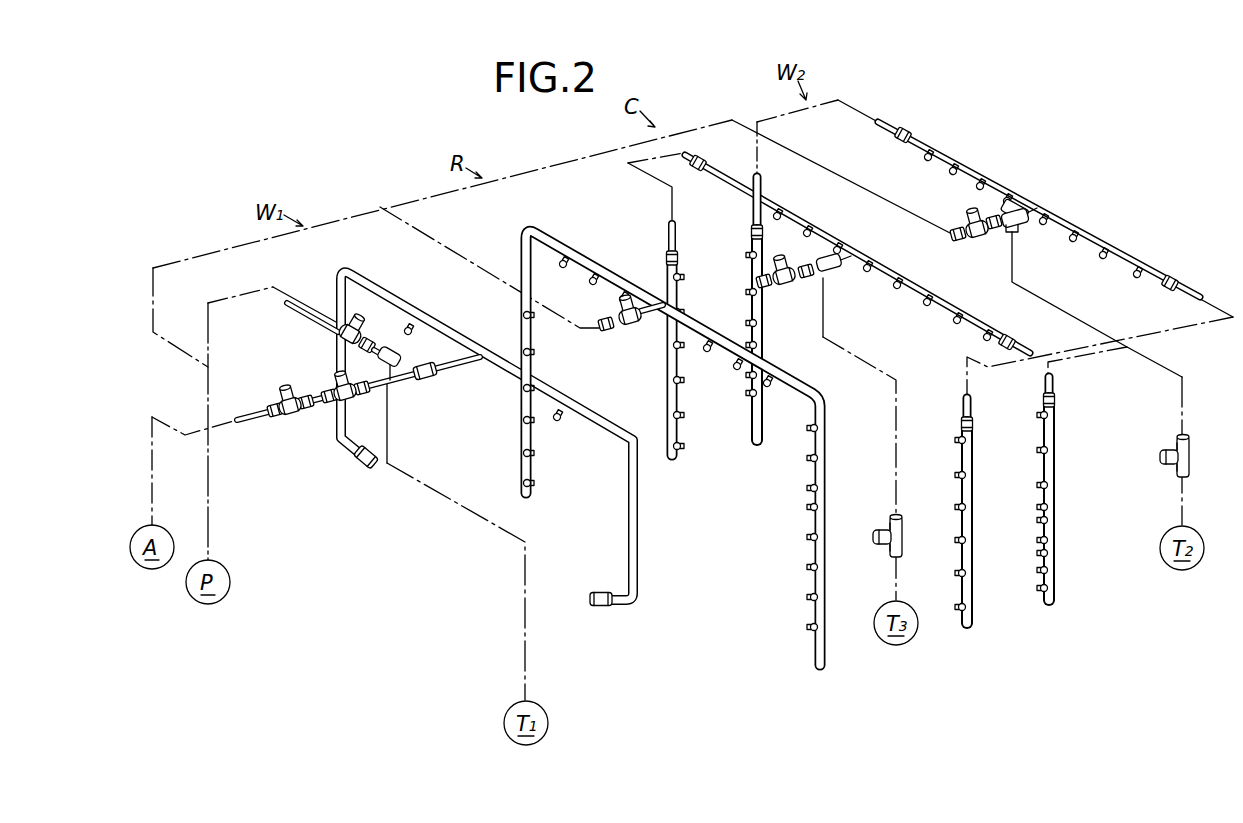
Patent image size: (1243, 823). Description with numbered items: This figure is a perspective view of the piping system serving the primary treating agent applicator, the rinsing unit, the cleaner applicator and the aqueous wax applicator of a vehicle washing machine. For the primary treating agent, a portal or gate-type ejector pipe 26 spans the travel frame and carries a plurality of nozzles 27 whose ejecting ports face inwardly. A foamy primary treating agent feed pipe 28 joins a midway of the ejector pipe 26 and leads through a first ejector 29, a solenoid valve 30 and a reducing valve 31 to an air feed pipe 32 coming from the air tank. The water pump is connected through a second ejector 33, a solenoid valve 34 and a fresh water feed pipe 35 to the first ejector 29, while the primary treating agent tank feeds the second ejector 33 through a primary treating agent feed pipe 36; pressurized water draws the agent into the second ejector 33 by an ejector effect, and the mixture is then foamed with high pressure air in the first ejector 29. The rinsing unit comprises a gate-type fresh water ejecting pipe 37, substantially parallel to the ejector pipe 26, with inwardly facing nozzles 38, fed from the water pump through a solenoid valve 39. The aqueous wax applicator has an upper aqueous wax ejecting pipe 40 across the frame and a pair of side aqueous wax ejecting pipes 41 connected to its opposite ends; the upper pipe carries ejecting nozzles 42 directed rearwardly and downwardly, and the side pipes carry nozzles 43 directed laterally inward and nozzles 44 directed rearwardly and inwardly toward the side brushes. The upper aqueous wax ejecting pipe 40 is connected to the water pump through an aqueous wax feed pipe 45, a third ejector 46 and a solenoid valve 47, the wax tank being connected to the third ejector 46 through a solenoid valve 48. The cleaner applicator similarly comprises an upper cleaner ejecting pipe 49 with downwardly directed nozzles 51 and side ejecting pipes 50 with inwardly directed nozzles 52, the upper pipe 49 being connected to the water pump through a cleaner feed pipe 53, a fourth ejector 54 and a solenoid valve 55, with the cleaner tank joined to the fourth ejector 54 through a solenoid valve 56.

The ejector pipe 26 is at (639, 523).
The nozzles 27 is at (404, 329).
The foamy primary treating agent feed pipe 28 is at (470, 366).
The first ejector 29 is at (427, 380).
The solenoid valve 30 is at (352, 401).
The reducing valve 31 is at (292, 415).
The air feed pipe 32 is at (247, 415).
The second ejector 33 is at (400, 354).
The solenoid valve 34 is at (340, 337).
The fresh water feed pipe 35 is at (303, 309).
The primary treating agent feed pipe 36 is at (449, 500).
The fresh water ejecting pipe 37 is at (826, 440).
The nozzles 38 is at (532, 483).
The solenoid valve 39 is at (631, 327).
The upper aqueous wax ejecting pipe 40 is at (1118, 250).
The side aqueous wax ejecting pipes 41 is at (756, 313).
The ejecting nozzles 42 is at (1103, 261).
The nozzles 43 is at (760, 325).
The nozzles 44 is at (746, 397).
The aqueous wax feed pipe 45 is at (1033, 205).
The third ejector 46 is at (1024, 228).
The solenoid valve 47 is at (976, 240).
The solenoid valve 48 is at (1192, 455).
The upper cleaner ejecting pipe 49 is at (905, 284).
The side ejecting pipes 50 is at (667, 393).
The nozzles 51 is at (955, 324).
The nozzles 52 is at (682, 422).
The cleaner feed pipe 53 is at (849, 255).
The fourth ejector 54 is at (835, 270).
The solenoid valve 55 is at (790, 285).
The solenoid valve 56 is at (904, 537).